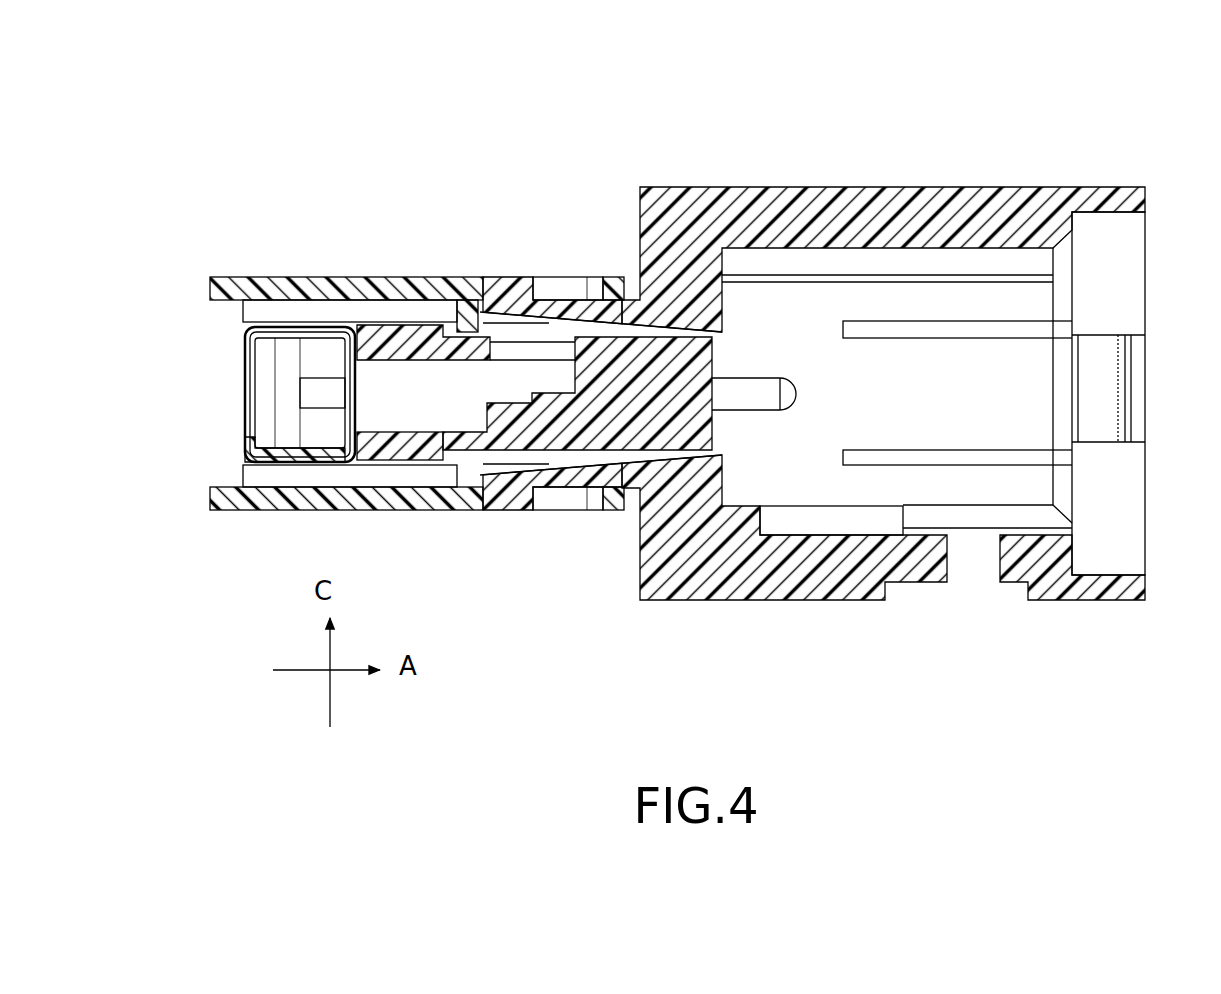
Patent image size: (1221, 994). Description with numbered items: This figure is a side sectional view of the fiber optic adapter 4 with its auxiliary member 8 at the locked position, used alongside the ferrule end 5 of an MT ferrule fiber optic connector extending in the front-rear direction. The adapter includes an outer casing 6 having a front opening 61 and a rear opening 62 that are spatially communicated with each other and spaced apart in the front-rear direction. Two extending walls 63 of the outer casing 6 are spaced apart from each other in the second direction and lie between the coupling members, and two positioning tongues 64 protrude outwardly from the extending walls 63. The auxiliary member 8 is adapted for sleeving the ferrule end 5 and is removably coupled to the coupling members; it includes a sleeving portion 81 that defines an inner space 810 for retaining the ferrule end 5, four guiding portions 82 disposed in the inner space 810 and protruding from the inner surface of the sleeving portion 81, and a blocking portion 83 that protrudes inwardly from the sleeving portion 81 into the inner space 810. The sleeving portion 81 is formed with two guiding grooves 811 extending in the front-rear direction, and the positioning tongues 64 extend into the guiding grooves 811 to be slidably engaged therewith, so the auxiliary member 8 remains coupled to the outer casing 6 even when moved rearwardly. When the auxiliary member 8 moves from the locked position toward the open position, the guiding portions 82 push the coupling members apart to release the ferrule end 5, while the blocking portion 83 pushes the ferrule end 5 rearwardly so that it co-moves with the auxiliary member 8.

The fiber optic adapter 4 is at (712, 176).
The ferrule end 5 is at (578, 440).
The outer casing 6 is at (1030, 187).
The front opening 61 is at (1120, 212).
The rear opening 62 is at (612, 330).
The extending walls 63 is at (560, 292).
The positioning tongues 64 is at (510, 275).
The auxiliary member 8 is at (349, 325).
The sleeving portion 81 is at (235, 277).
The inner space 810 is at (318, 288).
The guiding grooves 811 is at (598, 282).
The guiding portions 82 is at (240, 313).
The blocking portion 83 is at (420, 290).